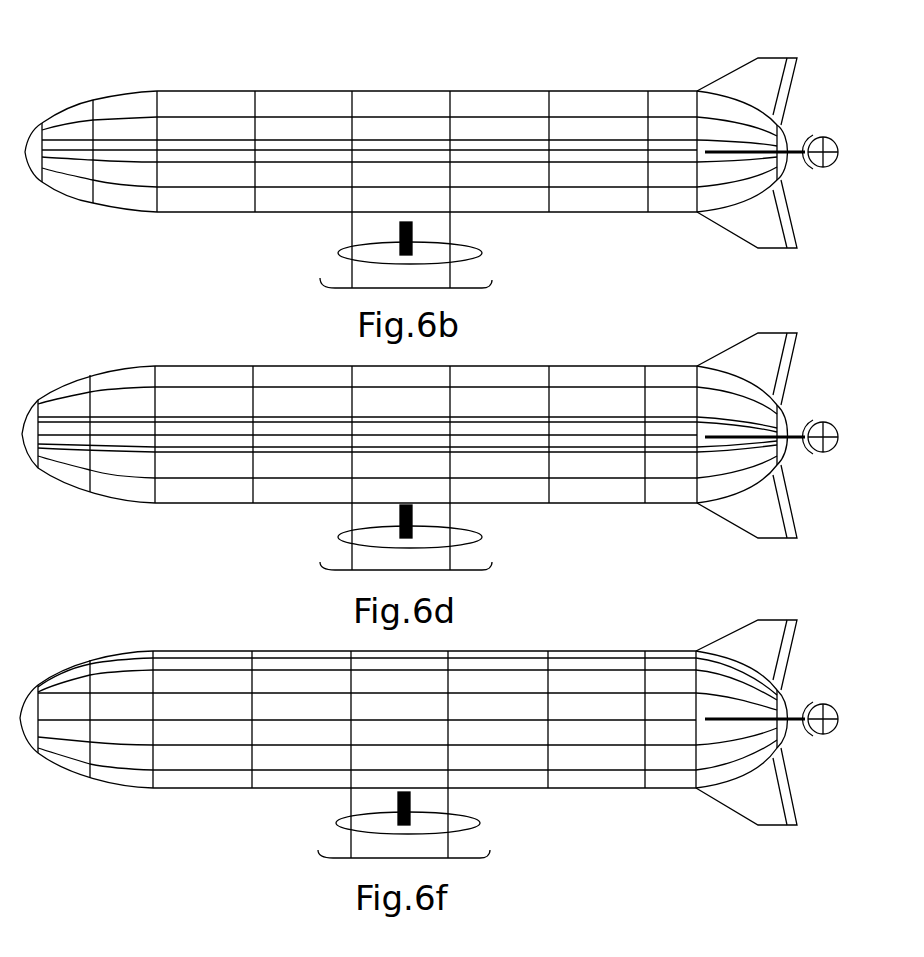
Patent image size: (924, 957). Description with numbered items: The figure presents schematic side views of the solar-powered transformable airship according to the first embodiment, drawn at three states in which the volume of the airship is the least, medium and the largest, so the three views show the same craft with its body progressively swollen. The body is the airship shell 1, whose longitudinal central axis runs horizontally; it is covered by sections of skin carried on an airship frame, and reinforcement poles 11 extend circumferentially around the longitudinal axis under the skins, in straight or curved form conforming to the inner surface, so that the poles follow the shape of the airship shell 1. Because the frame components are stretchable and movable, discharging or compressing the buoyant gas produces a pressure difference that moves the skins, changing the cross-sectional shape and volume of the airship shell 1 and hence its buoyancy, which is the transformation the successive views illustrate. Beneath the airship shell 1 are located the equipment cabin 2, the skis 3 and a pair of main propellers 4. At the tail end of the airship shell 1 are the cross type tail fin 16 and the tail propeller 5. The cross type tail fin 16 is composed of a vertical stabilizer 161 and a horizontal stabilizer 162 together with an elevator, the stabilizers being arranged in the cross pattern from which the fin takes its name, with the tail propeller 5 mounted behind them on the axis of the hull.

In FIG. 6B, the airship shell 1 is at (406, 120).
In FIG. 6B, the reinforcement poles 11 is at (352, 107).
In FIG. 6B, the equipment cabin 2 is at (338, 253).
In FIG. 6D, the equipment cabin 2 is at (338, 537).
In FIG. 6F, the equipment cabin 2 is at (336, 823).
In FIG. 6B, the skis 3 is at (492, 290).
In FIG. 6D, the skis 3 is at (488, 568).
In FIG. 6F, the skis 3 is at (493, 862).
In FIG. 6B, the main propellers 4 is at (412, 230).
In FIG. 6D, the main propellers 4 is at (412, 513).
In FIG. 6F, the main propellers 4 is at (410, 800).
In FIG. 6B, the tail propeller 5 is at (838, 151).
In FIG. 6D, the tail propeller 5 is at (838, 434).
In FIG. 6F, the tail propeller 5 is at (838, 716).
In FIG. 6B, the cross type tail fin 16 is at (751, 130).
In FIG. 6D, the cross type tail fin 16 is at (803, 422).
In FIG. 6F, the cross type tail fin 16 is at (793, 704).
In FIG. 6B, the vertical stabilizer 161 is at (758, 70).
In FIG. 6D, the vertical stabilizer 161 is at (760, 350).
In FIG. 6F, the vertical stabilizer 161 is at (740, 628).
In FIG. 6B, the horizontal stabilizer 162 is at (778, 146).
In FIG. 6D, the horizontal stabilizer 162 is at (779, 432).
In FIG. 6F, the horizontal stabilizer 162 is at (779, 714).